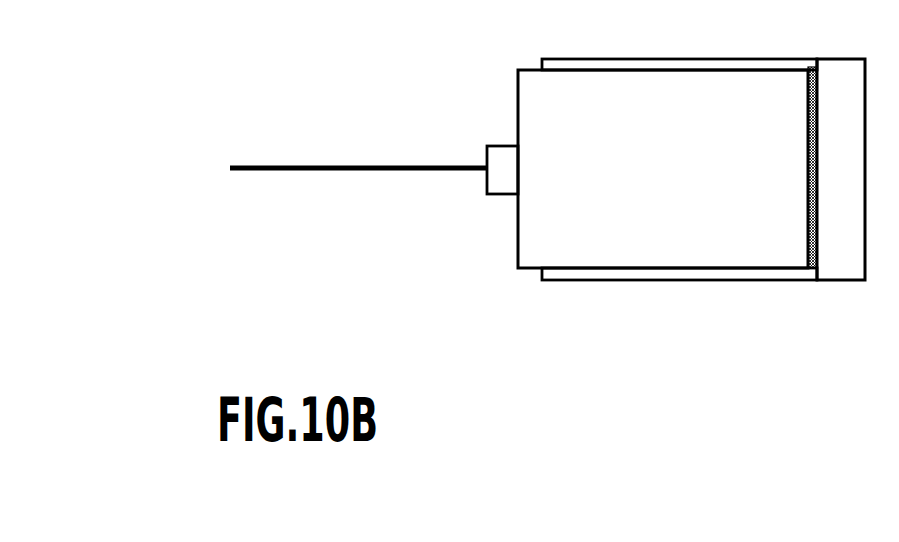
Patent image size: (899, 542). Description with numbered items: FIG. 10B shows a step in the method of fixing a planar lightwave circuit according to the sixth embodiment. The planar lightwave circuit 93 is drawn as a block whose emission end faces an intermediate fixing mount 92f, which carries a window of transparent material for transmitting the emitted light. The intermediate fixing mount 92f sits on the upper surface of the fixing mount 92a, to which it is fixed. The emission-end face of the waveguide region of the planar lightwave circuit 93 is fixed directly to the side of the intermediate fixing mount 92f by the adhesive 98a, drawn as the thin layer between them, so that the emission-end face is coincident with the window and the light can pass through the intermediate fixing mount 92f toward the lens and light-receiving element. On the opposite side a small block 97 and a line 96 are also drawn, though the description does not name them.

The planar lightwave circuit 93 is at (531, 231).
The terminal block 97 is at (505, 145).
The lead wire 96 is at (284, 166).
The fixing mount 92a is at (603, 281).
The intermediate fixing mount 92f is at (836, 265).
The adhesive 98a is at (815, 60).